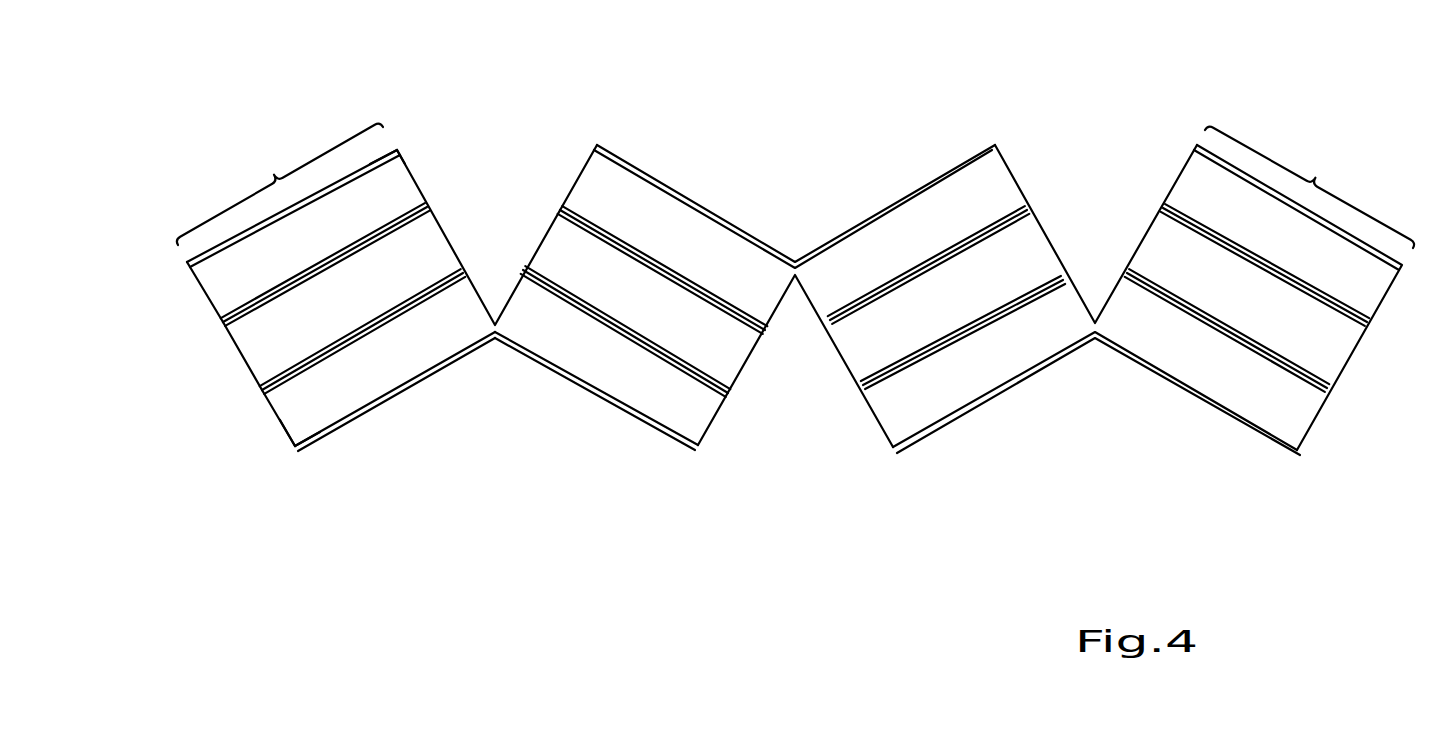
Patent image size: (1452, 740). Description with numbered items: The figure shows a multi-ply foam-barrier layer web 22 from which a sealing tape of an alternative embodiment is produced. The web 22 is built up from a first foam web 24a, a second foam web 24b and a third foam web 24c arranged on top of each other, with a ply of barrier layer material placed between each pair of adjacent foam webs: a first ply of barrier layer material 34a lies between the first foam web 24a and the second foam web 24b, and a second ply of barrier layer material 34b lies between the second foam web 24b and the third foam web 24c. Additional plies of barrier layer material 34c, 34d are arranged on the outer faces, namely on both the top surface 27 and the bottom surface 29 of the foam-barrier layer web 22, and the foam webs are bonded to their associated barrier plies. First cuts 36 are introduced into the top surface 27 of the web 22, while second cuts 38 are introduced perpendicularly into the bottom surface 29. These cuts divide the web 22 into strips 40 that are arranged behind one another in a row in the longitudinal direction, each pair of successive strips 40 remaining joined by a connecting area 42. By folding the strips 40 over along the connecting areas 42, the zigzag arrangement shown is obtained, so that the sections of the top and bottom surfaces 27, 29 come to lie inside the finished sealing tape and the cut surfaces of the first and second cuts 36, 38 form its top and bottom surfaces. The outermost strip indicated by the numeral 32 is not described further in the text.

The multi-ply foam-barrier layer web 22 is at (190, 344).
The first foam web 24a is at (288, 418).
The second foam web 24b is at (255, 350).
The third foam web 24c is at (210, 288).
The top surface 27 is at (397, 150).
The bottom surface 29 is at (303, 452).
The end panel 32 is at (1332, 348).
The first ply of barrier layer material 34a is at (463, 273).
The second ply of barrier layer material 34b is at (427, 203).
The additional ply of barrier layer material 34c is at (352, 418).
The additional ply of barrier layer material 34d is at (385, 152).
The first cuts 36 is at (519, 175).
The second cuts 38 is at (793, 395).
The strips 40 is at (795, 186).
The connecting area 42 is at (877, 210).